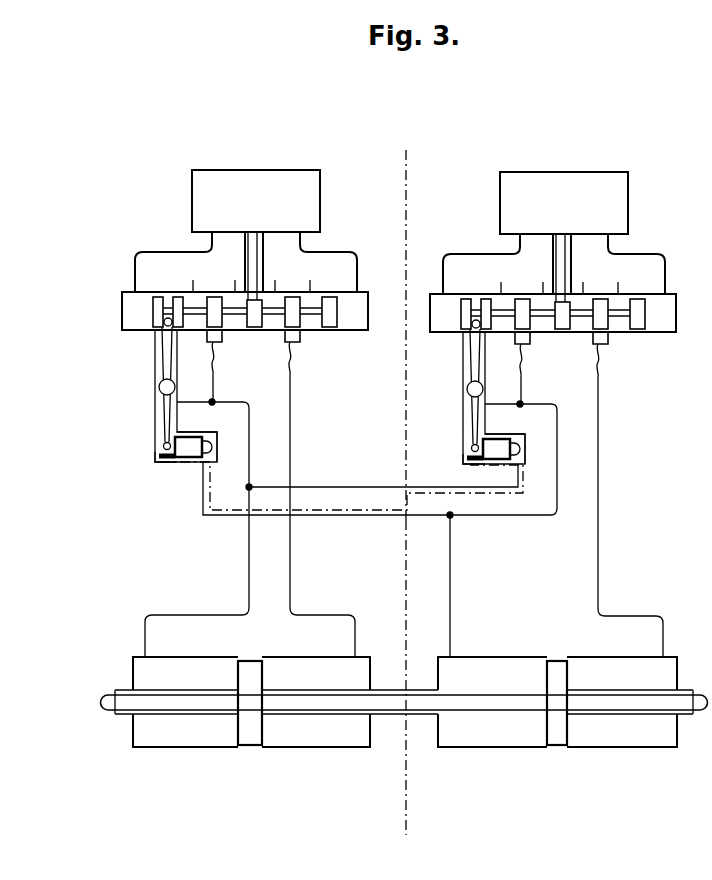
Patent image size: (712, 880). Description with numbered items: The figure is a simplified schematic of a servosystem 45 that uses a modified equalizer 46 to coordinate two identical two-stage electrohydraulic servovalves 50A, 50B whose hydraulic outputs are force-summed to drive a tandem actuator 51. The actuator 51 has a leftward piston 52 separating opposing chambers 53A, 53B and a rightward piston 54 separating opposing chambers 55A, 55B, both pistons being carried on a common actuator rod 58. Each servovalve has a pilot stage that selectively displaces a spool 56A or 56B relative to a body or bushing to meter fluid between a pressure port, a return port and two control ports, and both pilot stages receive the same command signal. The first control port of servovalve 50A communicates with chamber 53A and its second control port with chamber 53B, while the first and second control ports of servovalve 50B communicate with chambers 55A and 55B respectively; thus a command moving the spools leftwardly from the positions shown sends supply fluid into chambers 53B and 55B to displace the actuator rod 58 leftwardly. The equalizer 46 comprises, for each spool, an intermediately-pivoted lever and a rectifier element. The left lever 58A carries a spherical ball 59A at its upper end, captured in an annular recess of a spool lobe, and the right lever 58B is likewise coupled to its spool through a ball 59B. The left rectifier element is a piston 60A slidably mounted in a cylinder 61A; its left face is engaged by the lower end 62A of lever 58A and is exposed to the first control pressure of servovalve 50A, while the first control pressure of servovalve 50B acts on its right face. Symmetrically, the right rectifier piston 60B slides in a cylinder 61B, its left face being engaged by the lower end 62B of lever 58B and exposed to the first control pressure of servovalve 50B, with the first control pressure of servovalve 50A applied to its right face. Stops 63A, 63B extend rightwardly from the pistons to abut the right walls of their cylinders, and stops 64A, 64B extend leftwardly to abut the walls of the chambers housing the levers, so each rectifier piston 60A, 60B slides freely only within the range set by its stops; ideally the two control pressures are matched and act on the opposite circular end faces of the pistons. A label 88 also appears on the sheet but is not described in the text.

The servosystem 45 is at (434, 140).
The equalizer 46 is at (382, 533).
The two-stage electrohydraulic servovalve 50A is at (319, 248).
The two-stage electrohydraulic servovalve 50B is at (532, 210).
The tandem actuator 51 is at (420, 746).
The leftward piston 52 is at (251, 742).
The actuator chamber 53A is at (176, 702).
The actuator chamber 53B is at (350, 702).
The rightward piston 54 is at (557, 740).
The actuator chamber 55A is at (492, 702).
The actuator chamber 55B is at (630, 702).
The spool 56A is at (334, 318).
The spool 56B is at (561, 445).
The actuator rod 58 is at (392, 704).
The left lever 58A is at (151, 388).
The right lever 58B is at (468, 396).
The spherical ball 59A is at (156, 336).
The spherical ball 59B is at (446, 342).
The rectifier piston 60A is at (188, 437).
The rectifier piston 60B is at (503, 434).
The cylinder 61A is at (212, 444).
The cylinder 61B is at (536, 435).
The lower end of lever 62A is at (160, 446).
The lower end of lever 62B is at (447, 448).
The stop 63A is at (216, 446).
The stop 63B is at (541, 455).
The stop 64A is at (163, 466).
The stop 64B is at (448, 465).
The control channel 88 is at (701, 234).